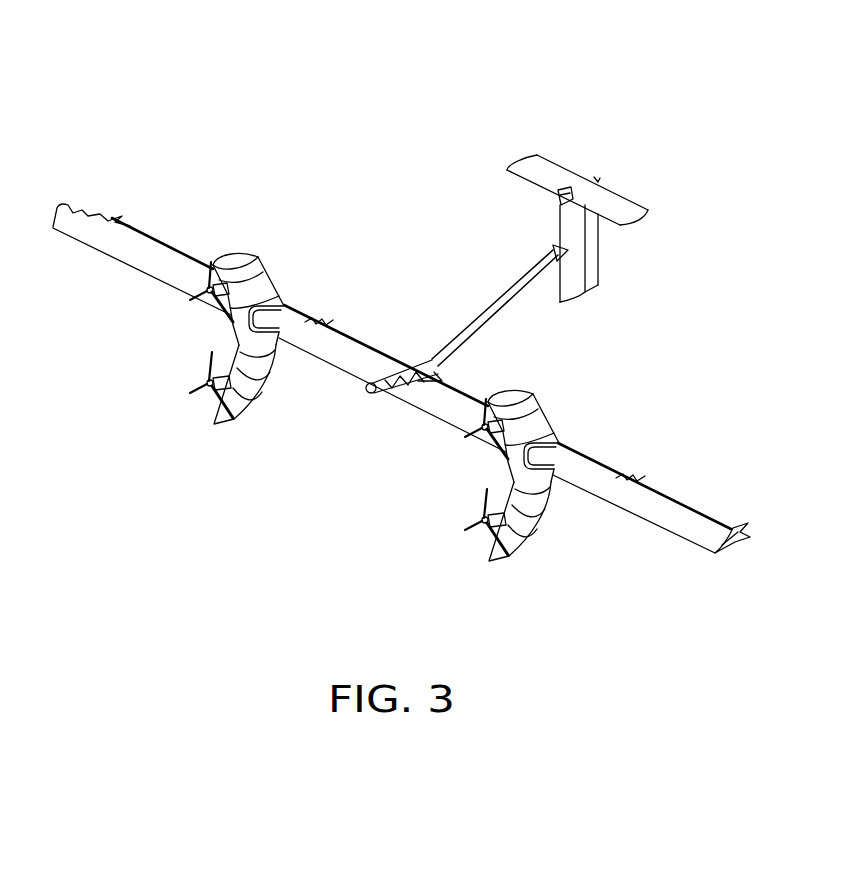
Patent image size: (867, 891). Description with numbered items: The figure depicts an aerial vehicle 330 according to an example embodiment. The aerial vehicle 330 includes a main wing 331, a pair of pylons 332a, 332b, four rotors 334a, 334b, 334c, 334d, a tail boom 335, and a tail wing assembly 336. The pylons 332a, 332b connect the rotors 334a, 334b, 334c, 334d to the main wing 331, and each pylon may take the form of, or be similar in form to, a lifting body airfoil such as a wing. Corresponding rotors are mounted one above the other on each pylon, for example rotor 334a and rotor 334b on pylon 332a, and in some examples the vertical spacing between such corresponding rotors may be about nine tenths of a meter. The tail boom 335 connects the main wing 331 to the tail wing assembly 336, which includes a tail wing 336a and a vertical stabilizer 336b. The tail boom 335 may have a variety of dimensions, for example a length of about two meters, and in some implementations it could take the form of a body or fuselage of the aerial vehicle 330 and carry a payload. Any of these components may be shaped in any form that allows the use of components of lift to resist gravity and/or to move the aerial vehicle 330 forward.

The aerial vehicle 330 is at (639, 72).
The main wing 331 is at (153, 260).
The pylon 332a is at (237, 262).
The pylon 332b is at (510, 397).
The rotor 334a is at (207, 293).
The rotor 334b is at (207, 390).
The rotor 334c is at (479, 433).
The rotor 334d is at (480, 527).
The tail boom 335 is at (477, 313).
The tail wing assembly 336 is at (676, 198).
The tail wing 336a is at (625, 207).
The vertical stabilizer 336b is at (593, 262).